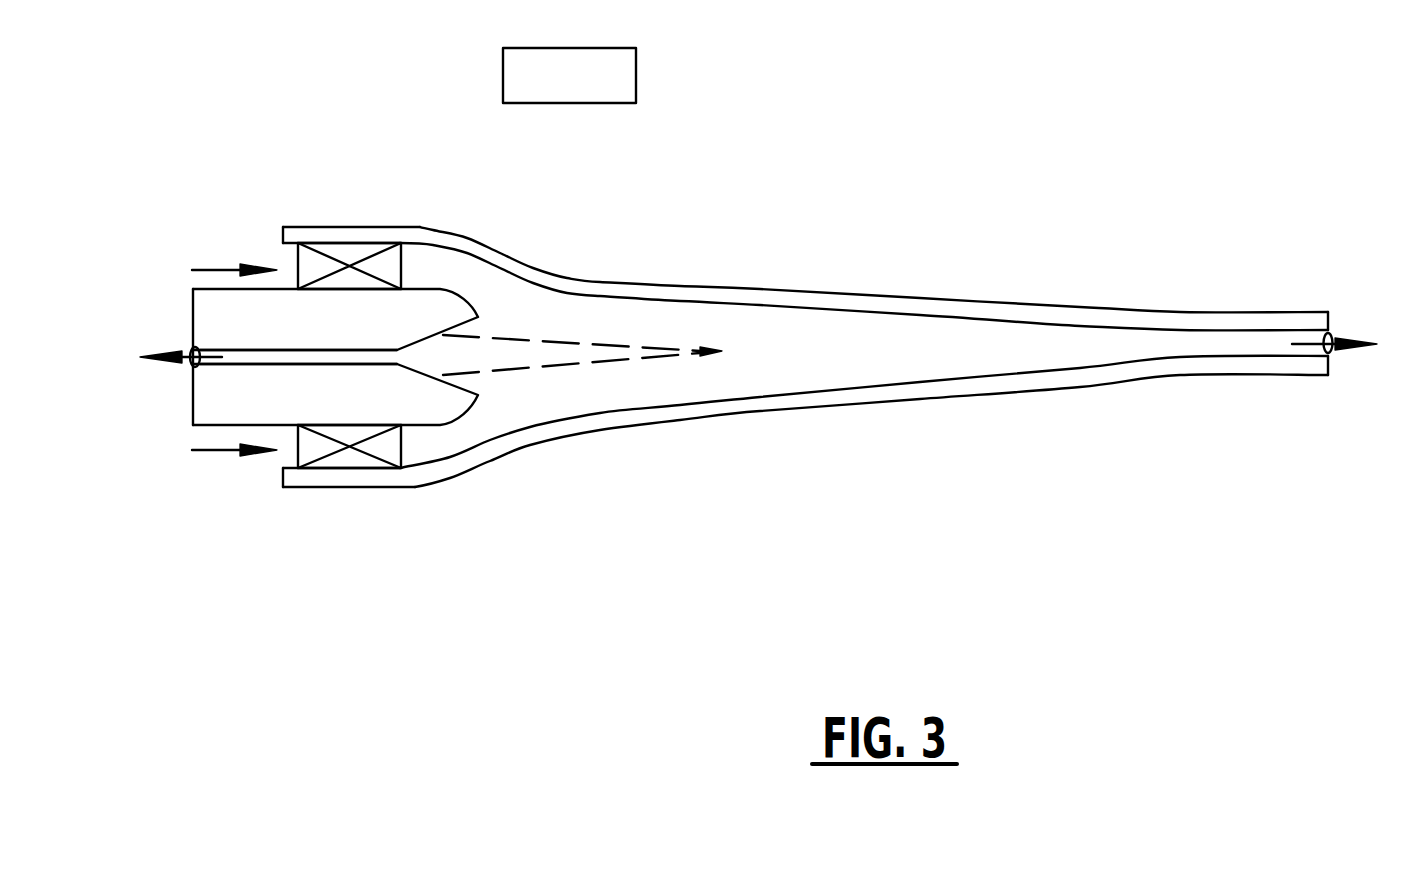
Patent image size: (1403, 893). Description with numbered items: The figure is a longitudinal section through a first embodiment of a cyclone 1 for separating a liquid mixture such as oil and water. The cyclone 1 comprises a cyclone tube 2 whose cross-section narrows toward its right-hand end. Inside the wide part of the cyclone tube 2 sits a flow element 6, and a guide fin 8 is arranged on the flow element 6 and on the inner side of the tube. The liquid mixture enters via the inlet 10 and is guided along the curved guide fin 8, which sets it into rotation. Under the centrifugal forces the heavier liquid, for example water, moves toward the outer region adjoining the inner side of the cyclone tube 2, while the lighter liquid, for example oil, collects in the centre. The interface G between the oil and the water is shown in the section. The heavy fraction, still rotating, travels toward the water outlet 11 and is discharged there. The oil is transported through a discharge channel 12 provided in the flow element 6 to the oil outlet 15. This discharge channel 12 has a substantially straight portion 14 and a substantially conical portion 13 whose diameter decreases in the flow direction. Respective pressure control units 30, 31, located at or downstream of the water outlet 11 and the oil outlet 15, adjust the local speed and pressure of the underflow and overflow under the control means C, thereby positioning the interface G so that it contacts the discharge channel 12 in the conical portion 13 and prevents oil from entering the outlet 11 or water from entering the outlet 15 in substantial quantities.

The cyclone 1 is at (865, 163).
The cyclone tube 2 is at (833, 303).
The flow element 6 is at (327, 303).
The guide fin 8 is at (390, 265).
The inlet 10 is at (290, 264).
The water outlet 11 is at (1308, 352).
The discharge channel 12 is at (287, 360).
The conical portion 13 is at (415, 377).
The straight portion 14 is at (242, 362).
The oil outlet 15 is at (170, 303).
The pressure control unit 30 is at (199, 348).
The pressure control unit 31 is at (1331, 333).
The interface G is at (547, 340).
The control means C is at (569, 75).